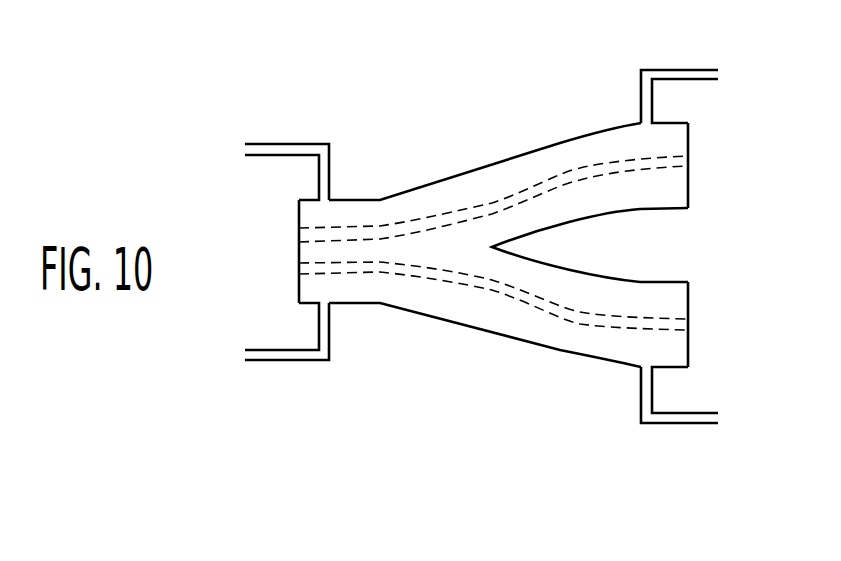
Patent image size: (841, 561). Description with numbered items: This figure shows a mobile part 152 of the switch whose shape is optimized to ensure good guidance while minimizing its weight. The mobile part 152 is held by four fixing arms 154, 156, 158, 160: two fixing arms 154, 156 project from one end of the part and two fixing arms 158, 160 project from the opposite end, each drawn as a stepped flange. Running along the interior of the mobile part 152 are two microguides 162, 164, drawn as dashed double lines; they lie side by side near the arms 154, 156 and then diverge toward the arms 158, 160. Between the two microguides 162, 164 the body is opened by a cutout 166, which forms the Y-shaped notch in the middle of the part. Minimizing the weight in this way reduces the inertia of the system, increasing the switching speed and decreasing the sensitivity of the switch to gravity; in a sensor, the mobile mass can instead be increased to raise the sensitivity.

The Y-shaped gas distribution manifold body 152 is at (528, 100).
The fixing arm 154 is at (298, 146).
The fixing arm 156 is at (305, 358).
The fixing arm 158 is at (665, 72).
The fixing arm 160 is at (670, 424).
The microguide 162 is at (322, 232).
The microguide 164 is at (317, 272).
The cutout 166 is at (590, 245).